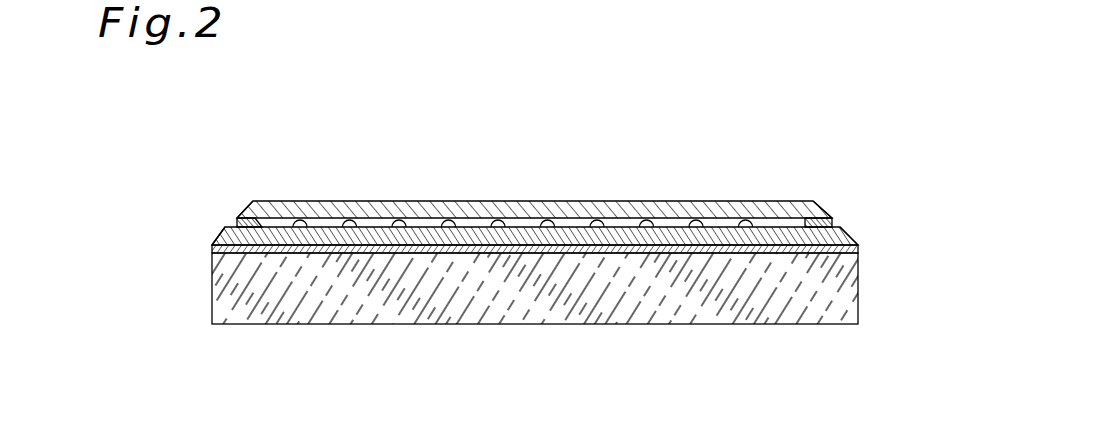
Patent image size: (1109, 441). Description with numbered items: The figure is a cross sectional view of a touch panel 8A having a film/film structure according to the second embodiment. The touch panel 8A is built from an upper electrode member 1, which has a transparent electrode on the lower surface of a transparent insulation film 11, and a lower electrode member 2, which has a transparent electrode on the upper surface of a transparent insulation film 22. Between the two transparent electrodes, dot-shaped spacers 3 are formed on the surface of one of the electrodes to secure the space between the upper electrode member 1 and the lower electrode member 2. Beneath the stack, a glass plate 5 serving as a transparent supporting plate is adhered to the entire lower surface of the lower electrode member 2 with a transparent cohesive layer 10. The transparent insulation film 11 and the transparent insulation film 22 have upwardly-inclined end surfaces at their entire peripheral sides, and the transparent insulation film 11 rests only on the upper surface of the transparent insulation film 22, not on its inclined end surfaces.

The upper electrode member 1 is at (534, 153).
The lower electrode member 2 is at (846, 227).
The dot-shaped spacers 3 is at (599, 230).
The glass plate (transparent supporting plate) 5 is at (453, 327).
The touch panel 8A is at (424, 199).
The transparent cohesive layer 10 is at (528, 273).
The transparent insulation film 11 is at (534, 161).
The transparent insulation film 22 is at (778, 241).